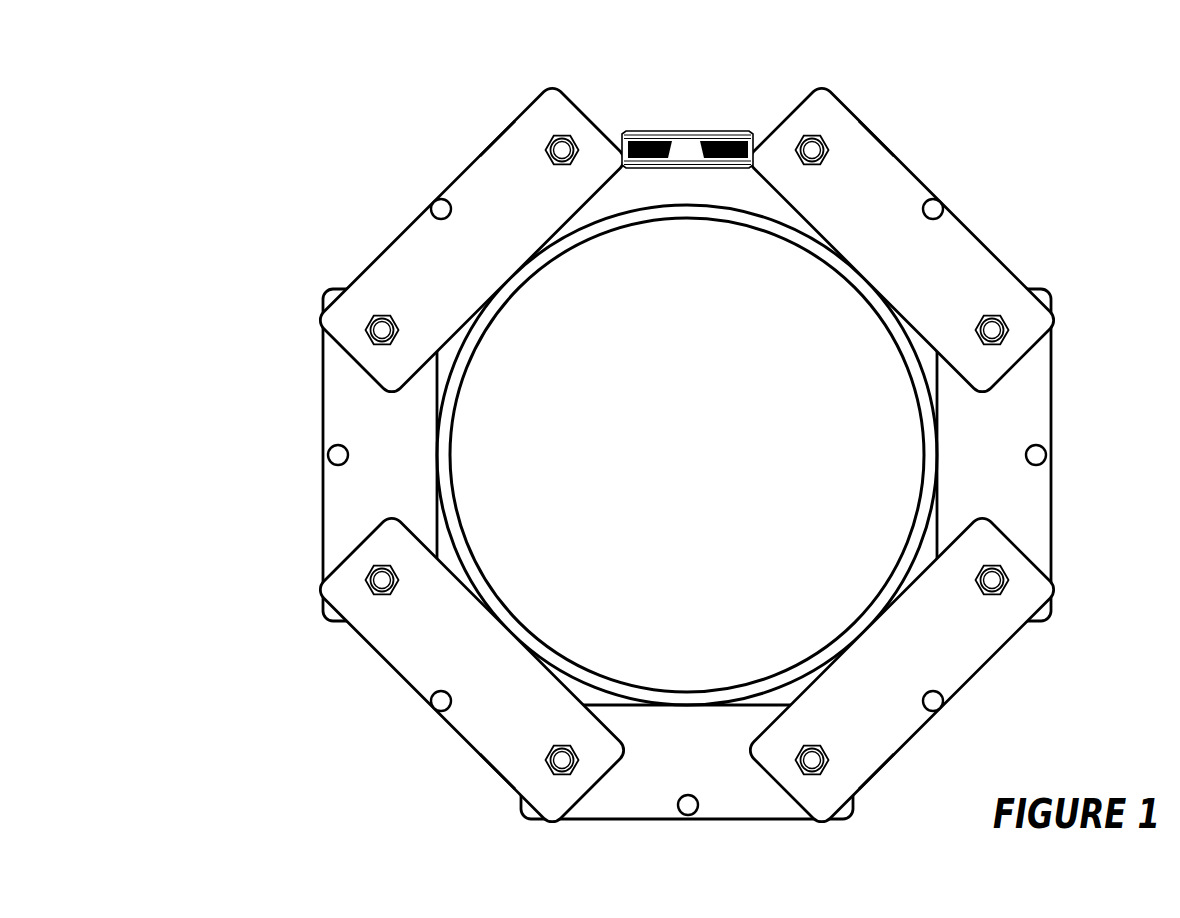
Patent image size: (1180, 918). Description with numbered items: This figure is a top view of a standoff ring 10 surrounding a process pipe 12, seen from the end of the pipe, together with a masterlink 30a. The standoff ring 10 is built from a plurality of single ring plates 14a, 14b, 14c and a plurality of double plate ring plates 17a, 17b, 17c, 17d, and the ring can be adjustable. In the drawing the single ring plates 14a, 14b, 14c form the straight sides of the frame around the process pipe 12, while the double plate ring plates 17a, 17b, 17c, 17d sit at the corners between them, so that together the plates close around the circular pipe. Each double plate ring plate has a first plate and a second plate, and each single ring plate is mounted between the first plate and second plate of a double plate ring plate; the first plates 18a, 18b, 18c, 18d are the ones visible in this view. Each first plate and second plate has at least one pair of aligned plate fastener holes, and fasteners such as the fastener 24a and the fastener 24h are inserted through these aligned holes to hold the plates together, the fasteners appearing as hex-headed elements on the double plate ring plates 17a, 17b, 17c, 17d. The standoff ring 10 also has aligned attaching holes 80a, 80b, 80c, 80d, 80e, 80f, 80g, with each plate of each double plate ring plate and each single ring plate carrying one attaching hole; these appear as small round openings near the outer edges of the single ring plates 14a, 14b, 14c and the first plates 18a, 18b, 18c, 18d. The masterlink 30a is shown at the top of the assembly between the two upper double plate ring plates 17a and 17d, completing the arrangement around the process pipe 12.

The standoff ring 10 is at (298, 110).
The process pipe 12 is at (473, 551).
The single ring plate 14a is at (1024, 422).
The single ring plate 14b is at (648, 793).
The single ring plate 14c is at (350, 422).
The double plate ring plate 17a is at (918, 167).
The double plate ring plate 17b is at (918, 743).
The double plate ring plate 17c is at (456, 743).
The double plate ring plate 17d is at (456, 167).
The first plate 18a is at (878, 173).
The first plate 18b is at (879, 738).
The first plate 18c is at (495, 738).
The first plate 18d is at (497, 173).
The fastener 24a is at (819, 133).
The fastener 24h is at (555, 133).
The masterlink 30a is at (692, 131).
The attaching hole 80a is at (942, 200).
The attaching hole 80b is at (1044, 447).
The attaching hole 80c is at (942, 712).
The attaching hole 80d is at (686, 815).
The attaching hole 80e is at (432, 712).
The attaching hole 80f is at (330, 447).
The attaching hole 80g is at (432, 200).